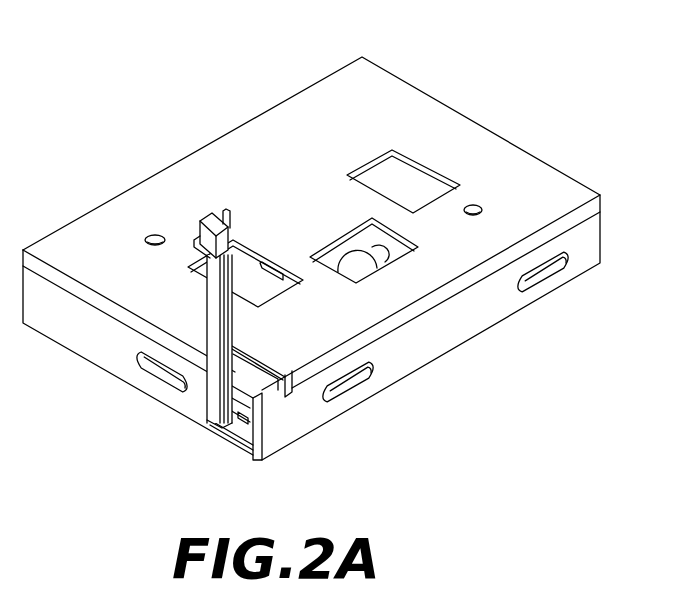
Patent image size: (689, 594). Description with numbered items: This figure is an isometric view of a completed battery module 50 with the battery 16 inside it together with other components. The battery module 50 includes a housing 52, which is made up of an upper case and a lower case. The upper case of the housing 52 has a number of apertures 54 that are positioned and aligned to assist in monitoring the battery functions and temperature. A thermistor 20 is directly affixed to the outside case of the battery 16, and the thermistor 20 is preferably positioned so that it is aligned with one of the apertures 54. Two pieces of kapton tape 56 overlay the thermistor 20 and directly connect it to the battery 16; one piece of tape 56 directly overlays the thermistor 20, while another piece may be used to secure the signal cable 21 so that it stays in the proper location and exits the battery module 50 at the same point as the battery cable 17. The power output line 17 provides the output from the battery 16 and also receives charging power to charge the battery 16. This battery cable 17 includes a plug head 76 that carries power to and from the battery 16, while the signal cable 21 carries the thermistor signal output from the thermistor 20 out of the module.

The battery module 50 is at (112, 76).
The housing 52 is at (585, 258).
The apertures 54 is at (412, 178).
The kapton tape 56 is at (340, 262).
The thermistor 20 is at (375, 252).
The battery 16 is at (255, 394).
The power output line 17 is at (213, 318).
The plug head 76 is at (201, 231).
The signal cable 21 is at (222, 210).